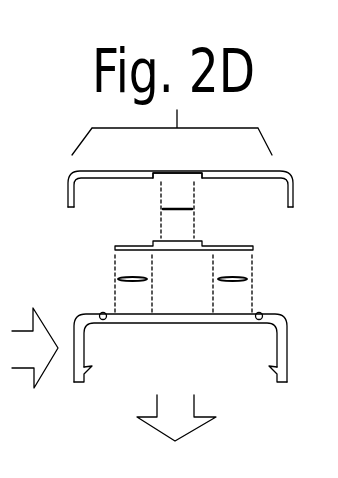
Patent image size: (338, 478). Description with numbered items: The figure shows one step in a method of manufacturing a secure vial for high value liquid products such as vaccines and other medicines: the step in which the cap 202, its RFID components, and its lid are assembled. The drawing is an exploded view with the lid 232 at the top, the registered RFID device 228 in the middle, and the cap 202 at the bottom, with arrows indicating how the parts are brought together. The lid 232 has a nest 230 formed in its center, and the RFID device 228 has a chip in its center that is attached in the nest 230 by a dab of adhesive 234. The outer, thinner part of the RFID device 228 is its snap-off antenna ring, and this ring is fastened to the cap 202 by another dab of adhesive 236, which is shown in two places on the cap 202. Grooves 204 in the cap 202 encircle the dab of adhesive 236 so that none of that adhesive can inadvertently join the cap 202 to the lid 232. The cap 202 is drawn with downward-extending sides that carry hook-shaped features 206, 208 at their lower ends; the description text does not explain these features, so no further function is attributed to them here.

The cap 202 is at (290, 325).
The grooves 204 is at (103, 312).
The latch hook 206 is at (272, 365).
The latch hook 208 is at (90, 371).
The registered RFID device 228 is at (116, 247).
The nest 230 is at (177, 182).
The lid 232 is at (68, 201).
The dab of adhesive 234 is at (188, 215).
The dab of adhesive 236 is at (222, 280).